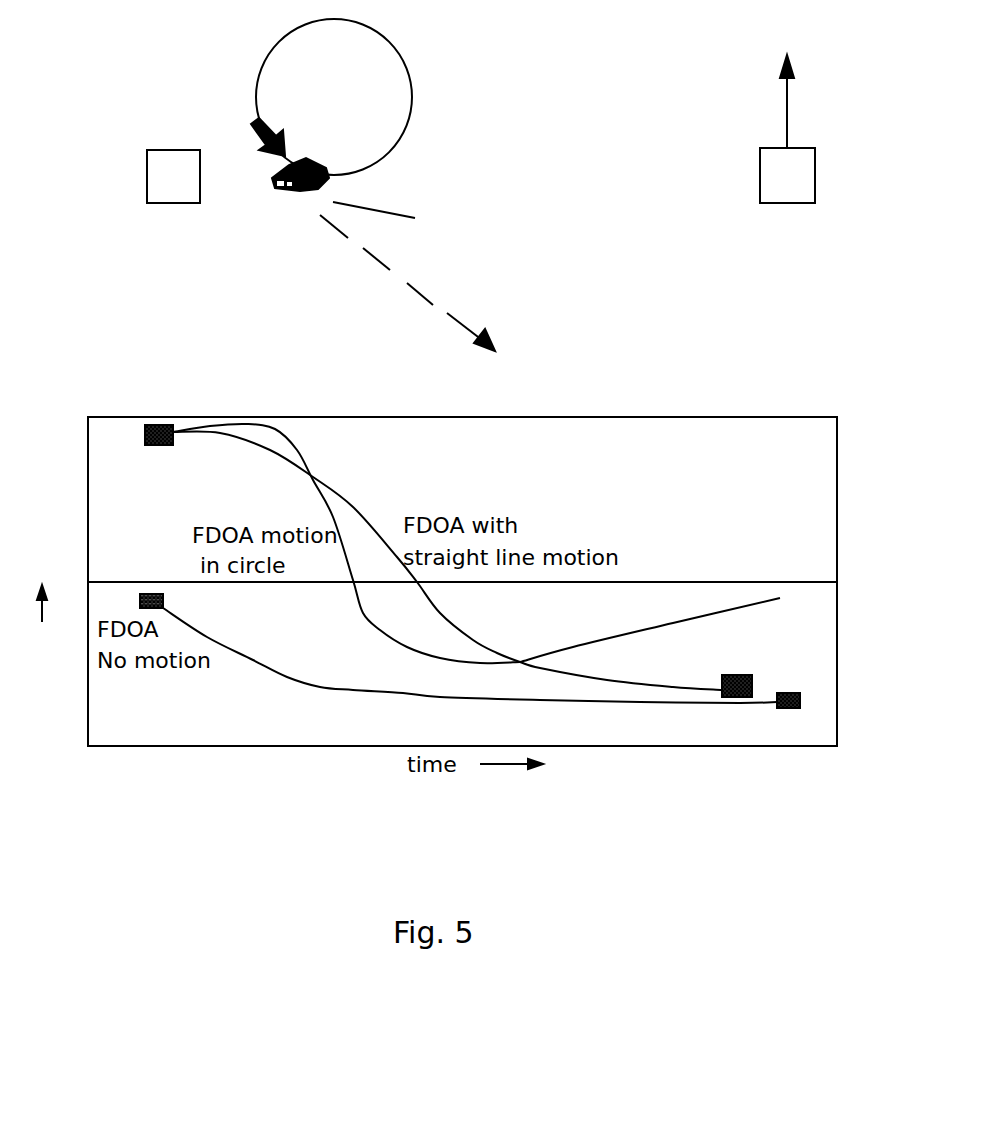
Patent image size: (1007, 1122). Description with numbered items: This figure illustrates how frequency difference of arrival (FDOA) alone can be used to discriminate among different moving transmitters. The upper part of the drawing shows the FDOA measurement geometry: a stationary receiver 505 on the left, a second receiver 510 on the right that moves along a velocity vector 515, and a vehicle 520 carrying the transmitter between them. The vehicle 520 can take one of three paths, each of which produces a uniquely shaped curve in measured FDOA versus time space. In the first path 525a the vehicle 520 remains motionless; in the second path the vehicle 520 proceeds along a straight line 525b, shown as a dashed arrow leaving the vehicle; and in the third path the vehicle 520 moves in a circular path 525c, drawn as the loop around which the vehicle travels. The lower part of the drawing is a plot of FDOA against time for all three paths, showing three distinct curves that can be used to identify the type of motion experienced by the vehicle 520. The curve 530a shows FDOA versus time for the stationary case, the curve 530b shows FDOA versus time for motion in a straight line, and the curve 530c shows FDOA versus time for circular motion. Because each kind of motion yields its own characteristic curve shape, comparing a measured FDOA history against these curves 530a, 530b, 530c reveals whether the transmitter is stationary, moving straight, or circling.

The stationary receiver 505 is at (175, 125).
The receiver 510 is at (755, 137).
The velocity vector 515 is at (807, 101).
The vehicle 520 is at (290, 193).
The first path 525a is at (417, 215).
The straight line 525b is at (450, 297).
The circular path 525c is at (413, 135).
The FDOA vs. time curve for stationary motion 530a is at (470, 655).
The FDOA vs. time curve for motion in a straight line 530b is at (346, 543).
The FDOA vs. time curve for circular motion 530c is at (650, 630).